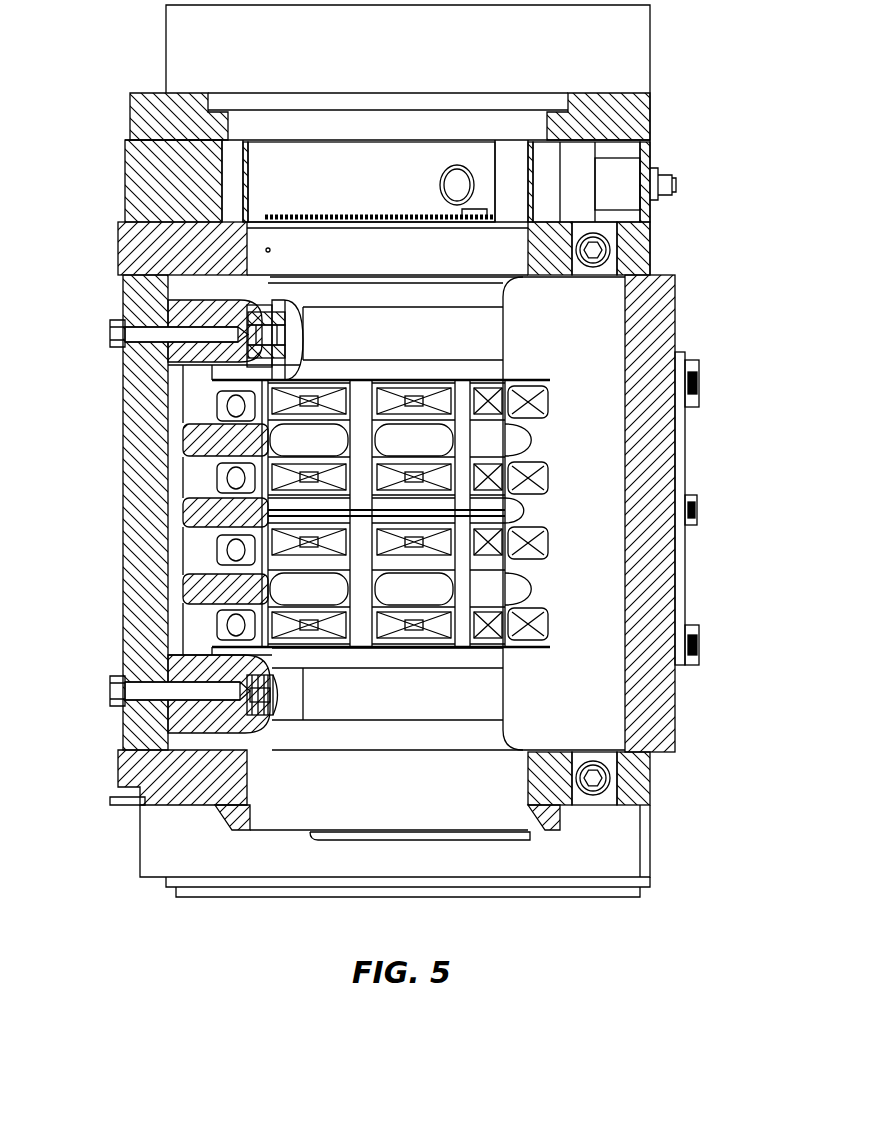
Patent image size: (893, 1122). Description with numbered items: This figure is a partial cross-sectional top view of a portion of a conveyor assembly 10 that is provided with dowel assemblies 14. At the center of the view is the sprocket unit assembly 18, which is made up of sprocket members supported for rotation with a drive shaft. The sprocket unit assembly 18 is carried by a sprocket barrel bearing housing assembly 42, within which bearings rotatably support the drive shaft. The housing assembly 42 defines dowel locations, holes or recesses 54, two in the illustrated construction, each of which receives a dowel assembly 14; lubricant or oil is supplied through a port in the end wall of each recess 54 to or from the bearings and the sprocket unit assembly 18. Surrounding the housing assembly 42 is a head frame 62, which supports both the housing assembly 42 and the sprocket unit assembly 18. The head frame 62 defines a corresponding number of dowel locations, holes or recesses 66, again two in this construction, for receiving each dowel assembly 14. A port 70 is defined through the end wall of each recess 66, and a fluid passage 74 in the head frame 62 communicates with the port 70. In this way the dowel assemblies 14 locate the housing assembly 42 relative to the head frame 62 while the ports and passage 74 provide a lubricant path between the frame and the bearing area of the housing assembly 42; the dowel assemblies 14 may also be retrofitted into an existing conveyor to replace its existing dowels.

The conveyor assembly 10 is at (702, 184).
The dowel assembly 14 is at (290, 294).
The sprocket unit assembly 18 is at (487, 393).
The sprocket barrel bearing housing assembly 42 is at (404, 342).
The recess 54 is at (295, 325).
The head frame 62 is at (133, 496).
The recess 66 is at (270, 308).
The port 70 is at (250, 318).
The fluid passage 74 is at (153, 333).